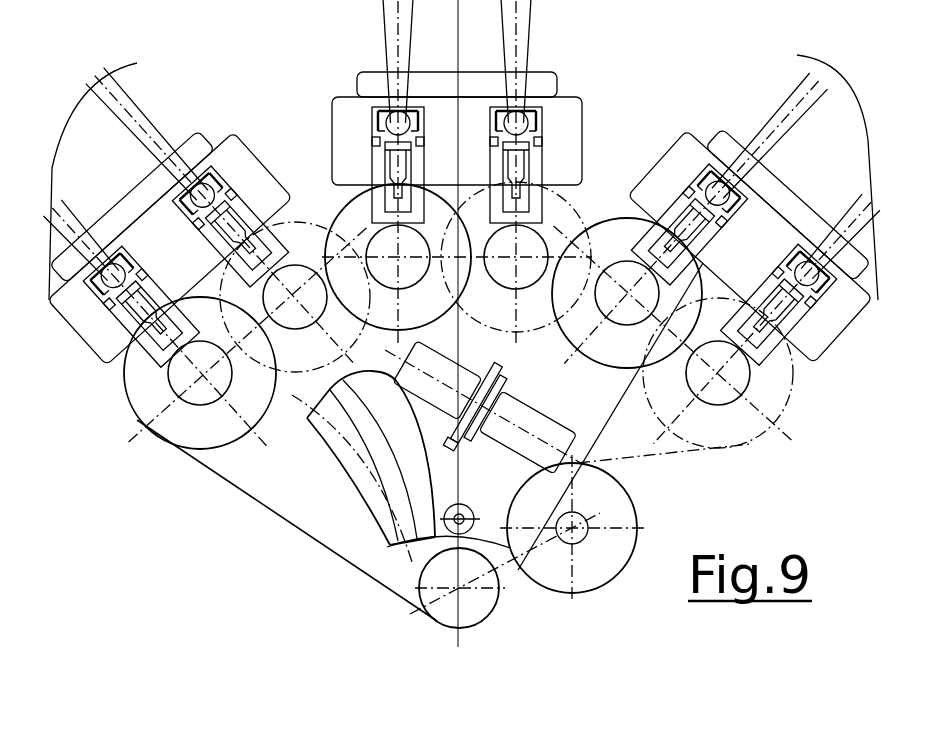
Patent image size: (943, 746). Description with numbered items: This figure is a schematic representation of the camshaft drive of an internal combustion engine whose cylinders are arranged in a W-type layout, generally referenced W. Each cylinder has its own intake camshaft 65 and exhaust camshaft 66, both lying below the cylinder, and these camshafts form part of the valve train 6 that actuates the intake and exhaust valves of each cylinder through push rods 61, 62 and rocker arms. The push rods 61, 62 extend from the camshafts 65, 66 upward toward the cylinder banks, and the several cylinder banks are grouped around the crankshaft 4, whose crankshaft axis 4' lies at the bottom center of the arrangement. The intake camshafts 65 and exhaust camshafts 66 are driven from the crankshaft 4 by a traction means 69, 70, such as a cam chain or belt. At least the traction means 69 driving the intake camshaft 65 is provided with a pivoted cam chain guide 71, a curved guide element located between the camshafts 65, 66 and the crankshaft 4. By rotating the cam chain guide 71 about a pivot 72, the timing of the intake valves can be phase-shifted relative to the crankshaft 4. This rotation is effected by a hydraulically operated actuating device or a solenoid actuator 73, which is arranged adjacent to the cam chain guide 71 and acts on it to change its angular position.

The crankshaft 4 is at (446, 609).
The crankshaft axis 4' is at (505, 586).
The valve train 6 is at (181, 458).
The W-type cylinder arrangement W is at (590, 147).
The push rod 61 is at (182, 167).
The push rod 62 is at (87, 253).
The intake camshaft 65 is at (293, 317).
The exhaust camshaft 66 is at (382, 245).
The traction means 69 is at (673, 455).
The traction means 70 is at (287, 527).
The cam chain guide 71 is at (387, 497).
The pivot 72 is at (465, 510).
The solenoid actuator 73 is at (505, 410).